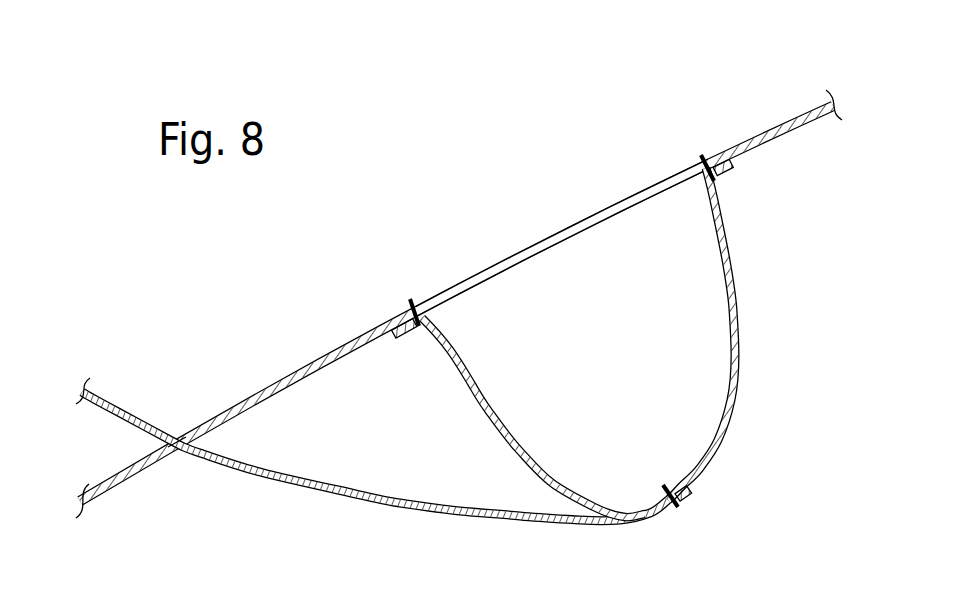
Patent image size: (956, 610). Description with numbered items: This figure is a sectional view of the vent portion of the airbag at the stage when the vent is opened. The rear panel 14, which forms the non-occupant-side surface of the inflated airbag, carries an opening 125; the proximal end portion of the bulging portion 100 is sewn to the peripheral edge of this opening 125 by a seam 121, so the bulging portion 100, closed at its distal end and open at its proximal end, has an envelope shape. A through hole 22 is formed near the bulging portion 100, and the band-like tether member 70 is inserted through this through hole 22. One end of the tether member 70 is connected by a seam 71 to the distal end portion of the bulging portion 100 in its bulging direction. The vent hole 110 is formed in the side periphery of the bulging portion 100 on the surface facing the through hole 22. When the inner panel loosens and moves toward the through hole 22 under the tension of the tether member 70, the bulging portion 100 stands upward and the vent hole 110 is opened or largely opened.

The rear panel 14 is at (785, 136).
The through hole 22 is at (171, 453).
The tether member 70 is at (337, 496).
The seam 71 is at (677, 503).
The bulging portion 100 is at (740, 366).
The vent hole 110 is at (506, 428).
The seam 121 is at (412, 300).
The opening 125 is at (603, 212).